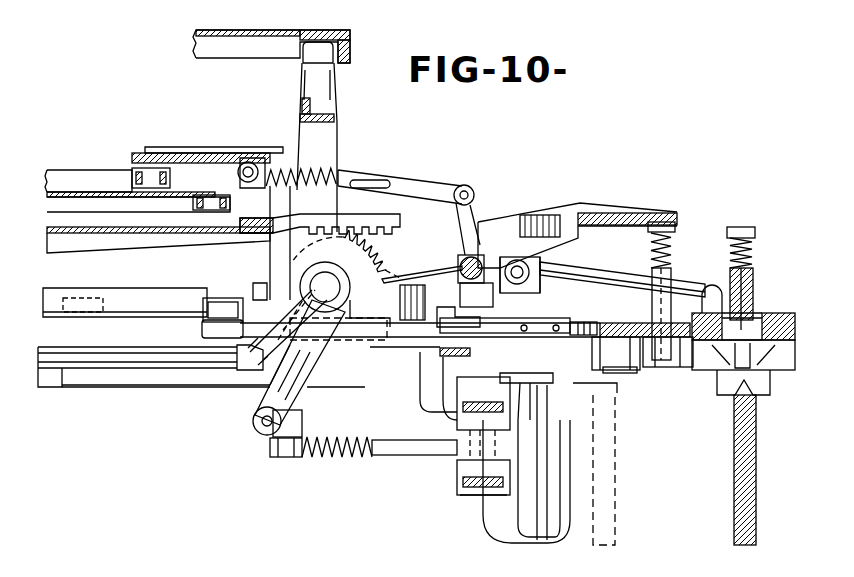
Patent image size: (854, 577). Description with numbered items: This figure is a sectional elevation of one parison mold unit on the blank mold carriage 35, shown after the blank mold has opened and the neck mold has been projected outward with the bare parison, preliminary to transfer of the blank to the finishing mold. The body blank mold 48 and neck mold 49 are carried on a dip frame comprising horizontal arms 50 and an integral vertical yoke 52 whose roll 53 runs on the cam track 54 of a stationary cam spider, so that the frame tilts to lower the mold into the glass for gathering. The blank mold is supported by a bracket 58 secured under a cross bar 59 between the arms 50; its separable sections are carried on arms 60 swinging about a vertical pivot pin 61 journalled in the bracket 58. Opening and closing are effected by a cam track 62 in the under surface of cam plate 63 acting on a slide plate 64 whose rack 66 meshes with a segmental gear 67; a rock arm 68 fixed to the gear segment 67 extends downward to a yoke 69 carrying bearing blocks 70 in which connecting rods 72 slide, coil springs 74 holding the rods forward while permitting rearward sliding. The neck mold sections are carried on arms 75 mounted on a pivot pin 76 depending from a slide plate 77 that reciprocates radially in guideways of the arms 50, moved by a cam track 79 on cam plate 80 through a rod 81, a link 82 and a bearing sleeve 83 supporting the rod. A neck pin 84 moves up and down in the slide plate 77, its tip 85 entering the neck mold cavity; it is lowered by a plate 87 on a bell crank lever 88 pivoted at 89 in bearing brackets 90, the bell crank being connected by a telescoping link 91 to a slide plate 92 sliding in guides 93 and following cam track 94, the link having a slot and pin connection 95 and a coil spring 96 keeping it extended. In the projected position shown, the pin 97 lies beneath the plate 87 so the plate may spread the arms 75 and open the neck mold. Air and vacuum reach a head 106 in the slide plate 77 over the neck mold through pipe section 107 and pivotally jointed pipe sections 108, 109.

The blank mold carriage 35 is at (205, 388).
The body blank mold 48 is at (480, 513).
The neck mold 49 is at (797, 355).
The arms 50 is at (537, 287).
The yoke 52 is at (340, 136).
The roll 53 is at (330, 52).
The cam track 54 is at (352, 46).
The bracket 58 is at (418, 398).
The cross bar 59 is at (440, 352).
The arms 60 is at (462, 481).
The vertical pivot pin 61 is at (465, 494).
The cam track 62 is at (190, 202).
The cam plate 63 is at (65, 176).
The slide plate 64 is at (215, 240).
The rack 66 is at (400, 220).
The segmental gear 67 is at (372, 248).
The rock arm 68 is at (310, 356).
The yoke 69 is at (303, 420).
The bearing blocks 70 is at (282, 458).
The connecting rods 72 is at (350, 462).
The coil springs 74 is at (323, 460).
The arms 75 is at (690, 363).
The pivot pin 76 is at (628, 373).
The slide plate 77 is at (598, 345).
The cam track 79 is at (215, 300).
The cam plate 80 is at (140, 300).
The rod 81 is at (470, 333).
The link 82 is at (545, 333).
The bearing sleeve 83 is at (365, 318).
The neck pin 84 is at (755, 282).
The tip 85 is at (760, 382).
The plate 87 is at (655, 212).
The bell crank lever 88 is at (552, 210).
The pivot 89 is at (458, 265).
The bearing brackets 90 is at (460, 300).
The link 91 is at (440, 185).
The slide plate 92 is at (185, 150).
The guides 93 is at (255, 158).
The cam track 94 is at (130, 178).
The slot and pin connection 95 is at (385, 184).
The coil spring 96 is at (320, 174).
The pin 97 is at (676, 245).
The head 106 is at (780, 322).
The pipe section 107 is at (160, 353).
The pipe section 108 is at (418, 278).
The pipe section 109 is at (575, 273).